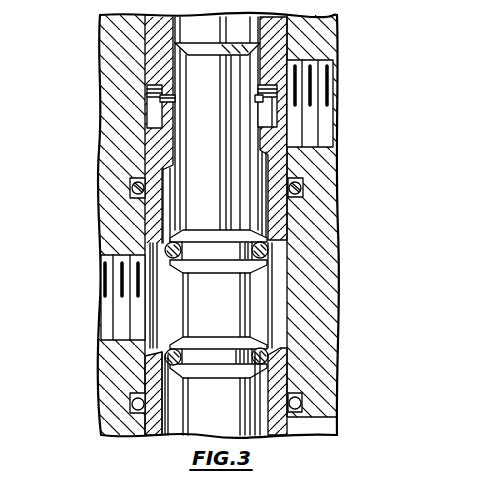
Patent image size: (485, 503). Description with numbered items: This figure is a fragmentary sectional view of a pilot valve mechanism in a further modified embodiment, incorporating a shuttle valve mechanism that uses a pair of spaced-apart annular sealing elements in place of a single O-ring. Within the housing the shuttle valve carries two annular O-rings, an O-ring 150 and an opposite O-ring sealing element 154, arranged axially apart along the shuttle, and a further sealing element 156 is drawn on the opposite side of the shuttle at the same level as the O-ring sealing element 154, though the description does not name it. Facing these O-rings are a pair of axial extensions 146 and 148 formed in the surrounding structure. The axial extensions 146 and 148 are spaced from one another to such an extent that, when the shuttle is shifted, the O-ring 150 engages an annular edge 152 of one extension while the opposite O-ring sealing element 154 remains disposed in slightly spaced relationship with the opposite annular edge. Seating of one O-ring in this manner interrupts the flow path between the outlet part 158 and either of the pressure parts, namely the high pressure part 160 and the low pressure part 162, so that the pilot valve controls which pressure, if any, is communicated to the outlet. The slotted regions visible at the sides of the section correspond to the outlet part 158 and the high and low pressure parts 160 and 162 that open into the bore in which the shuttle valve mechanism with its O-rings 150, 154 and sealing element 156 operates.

The axial extension 146 is at (275, 212).
The axial extension 148 is at (274, 368).
The O-ring 150 is at (170, 353).
The annular edge 152 is at (272, 352).
The O-ring sealing element 154 is at (146, 239).
The upper right O-ring seal 156 is at (270, 240).
The outlet part 158 is at (118, 318).
The high pressure part 160 is at (312, 113).
The low pressure part 162 is at (310, 416).